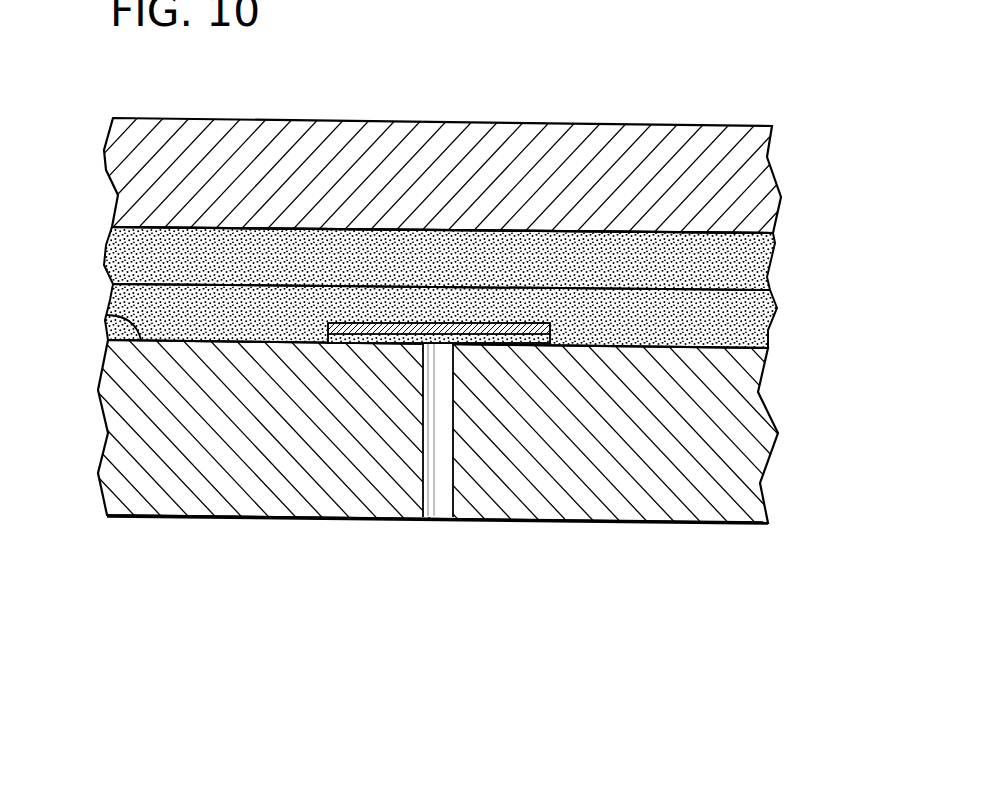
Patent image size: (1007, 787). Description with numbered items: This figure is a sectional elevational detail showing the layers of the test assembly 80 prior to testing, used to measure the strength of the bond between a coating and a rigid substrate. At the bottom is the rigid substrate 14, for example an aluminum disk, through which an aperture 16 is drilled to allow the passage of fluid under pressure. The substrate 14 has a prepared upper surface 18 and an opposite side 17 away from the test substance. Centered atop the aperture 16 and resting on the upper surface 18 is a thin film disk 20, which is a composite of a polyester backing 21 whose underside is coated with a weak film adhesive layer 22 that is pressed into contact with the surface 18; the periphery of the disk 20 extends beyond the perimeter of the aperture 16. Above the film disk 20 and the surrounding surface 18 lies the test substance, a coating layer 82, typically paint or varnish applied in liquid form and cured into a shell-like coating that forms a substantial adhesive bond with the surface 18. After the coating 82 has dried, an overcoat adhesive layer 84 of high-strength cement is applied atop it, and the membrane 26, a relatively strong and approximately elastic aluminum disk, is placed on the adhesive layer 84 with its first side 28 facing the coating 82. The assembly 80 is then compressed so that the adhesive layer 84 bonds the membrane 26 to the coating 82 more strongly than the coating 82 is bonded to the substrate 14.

The test assembly 80 is at (728, 94).
The membrane 26 is at (578, 122).
The first side of the membrane 28 is at (133, 229).
The overcoat adhesive layer 84 is at (764, 257).
The coating layer 82 is at (784, 308).
The upper surface of the substrate 18 is at (106, 315).
The thin film disk 20 is at (364, 314).
The polyester backing 21 is at (452, 324).
The weak film adhesive layer 22 is at (500, 344).
The rigid substrate 14 is at (784, 412).
The aperture 16 is at (448, 494).
The side of the substrate opposite the test substance 17 is at (177, 520).